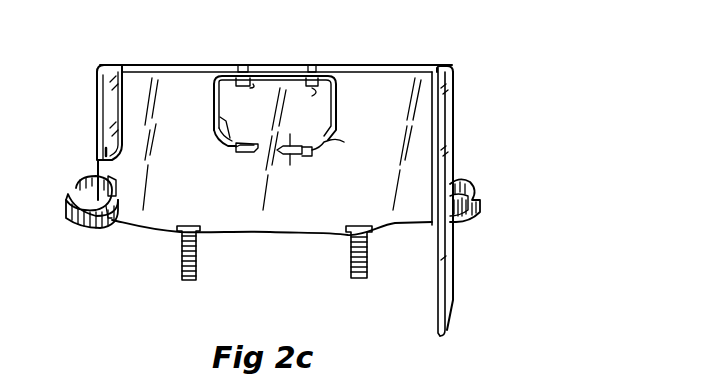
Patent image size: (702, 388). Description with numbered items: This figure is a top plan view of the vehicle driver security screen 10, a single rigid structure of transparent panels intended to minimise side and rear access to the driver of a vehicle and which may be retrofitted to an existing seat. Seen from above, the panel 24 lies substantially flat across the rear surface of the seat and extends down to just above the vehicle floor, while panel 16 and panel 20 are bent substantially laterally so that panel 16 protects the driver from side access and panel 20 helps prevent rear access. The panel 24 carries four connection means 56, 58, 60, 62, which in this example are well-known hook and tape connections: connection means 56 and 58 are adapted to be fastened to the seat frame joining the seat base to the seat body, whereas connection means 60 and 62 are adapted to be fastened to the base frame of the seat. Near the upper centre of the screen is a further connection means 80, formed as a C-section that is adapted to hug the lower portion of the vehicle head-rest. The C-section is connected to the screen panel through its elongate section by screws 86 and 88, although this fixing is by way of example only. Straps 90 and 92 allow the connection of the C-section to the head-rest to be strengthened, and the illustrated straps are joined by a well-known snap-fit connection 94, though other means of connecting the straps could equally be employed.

The vehicle driver security screen 10 is at (345, 152).
The panel 16 is at (446, 118).
The panel 20 is at (105, 117).
The panel 24 is at (283, 215).
The connection means 56 is at (470, 222).
The connection means 58 is at (78, 222).
The connection means 60 is at (358, 280).
The connection means 62 is at (182, 276).
The connection means 80 is at (298, 102).
The screw 86 is at (258, 82).
The screw 88 is at (313, 93).
The strap 90 is at (214, 118).
The strap 92 is at (338, 116).
The snap-fit connection 94 is at (237, 154).